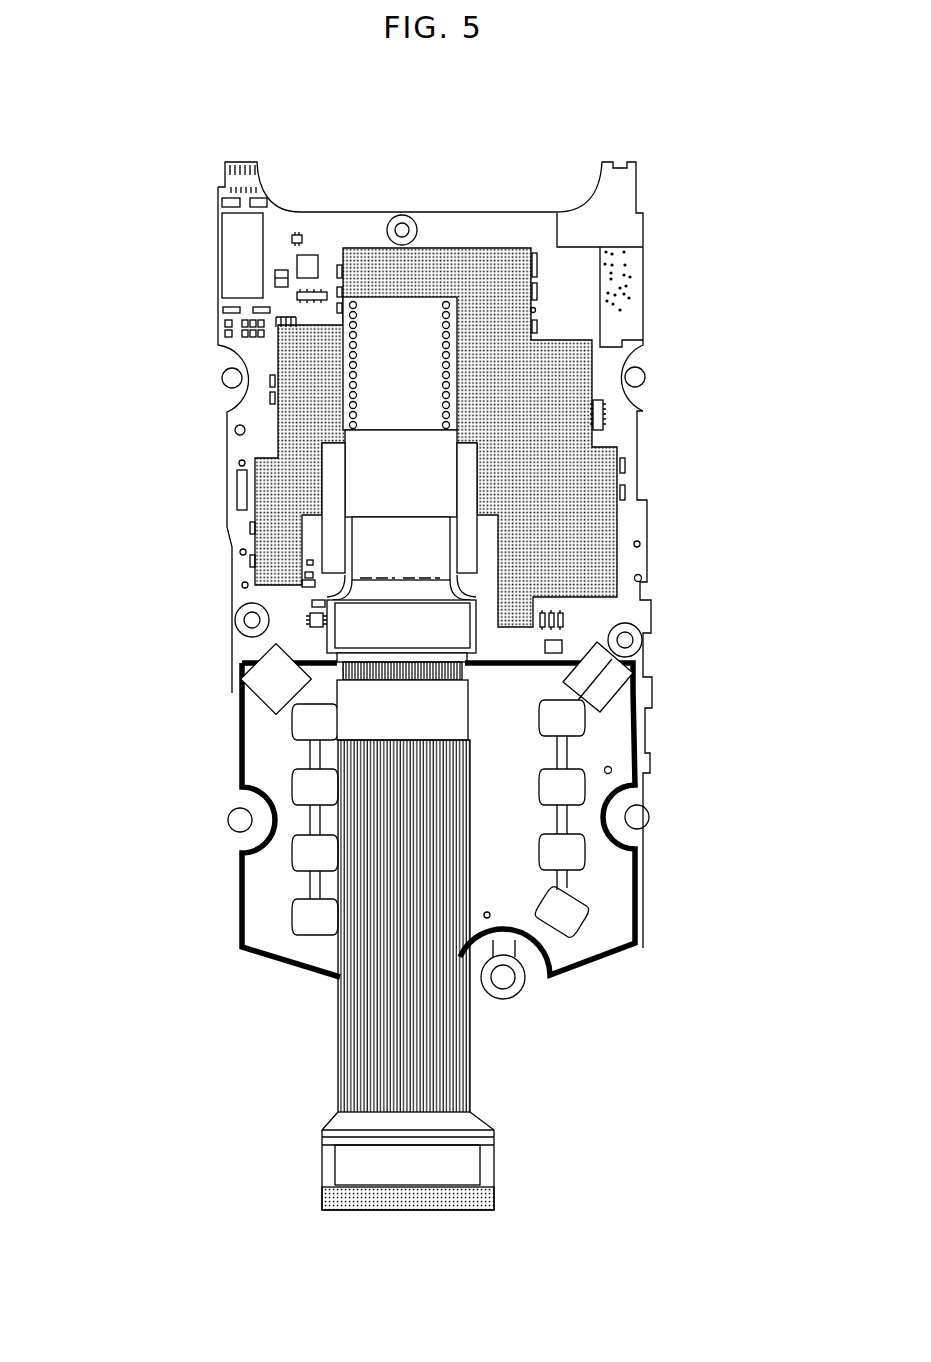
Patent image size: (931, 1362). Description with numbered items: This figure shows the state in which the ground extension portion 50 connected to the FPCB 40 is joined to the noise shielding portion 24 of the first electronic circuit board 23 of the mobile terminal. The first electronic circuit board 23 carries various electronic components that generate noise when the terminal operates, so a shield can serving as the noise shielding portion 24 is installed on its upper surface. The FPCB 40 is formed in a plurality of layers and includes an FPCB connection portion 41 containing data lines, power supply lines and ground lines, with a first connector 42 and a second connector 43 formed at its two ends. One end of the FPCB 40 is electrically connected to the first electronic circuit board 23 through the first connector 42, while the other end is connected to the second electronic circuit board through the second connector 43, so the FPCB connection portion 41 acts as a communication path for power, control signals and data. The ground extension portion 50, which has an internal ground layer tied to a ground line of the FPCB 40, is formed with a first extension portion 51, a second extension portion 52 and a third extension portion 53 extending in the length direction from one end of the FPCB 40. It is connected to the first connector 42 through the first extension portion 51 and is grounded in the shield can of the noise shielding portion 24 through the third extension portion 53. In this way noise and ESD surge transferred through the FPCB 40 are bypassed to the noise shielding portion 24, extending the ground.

The first electronic circuit board 23 is at (627, 327).
The noise shielding portion 24 is at (603, 398).
The FPCB 40 is at (421, 936).
The FPCB connection portion 41 is at (432, 1053).
The first connector 42 is at (483, 636).
The second connector 43 is at (497, 1167).
The ground extension portion 50 is at (292, 497).
The first extension portion 51 is at (415, 556).
The second extension portion 52 is at (423, 483).
The third extension portion 53 is at (418, 325).